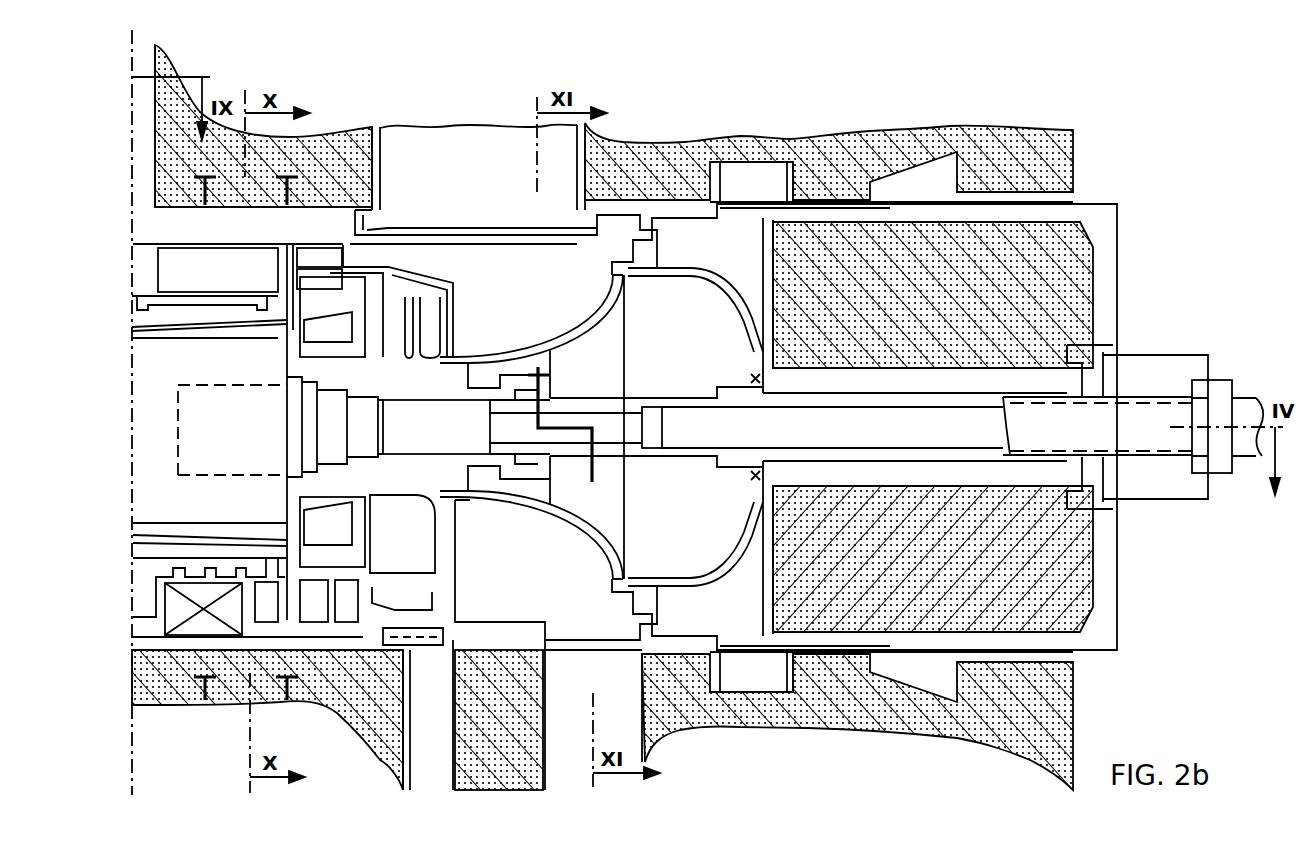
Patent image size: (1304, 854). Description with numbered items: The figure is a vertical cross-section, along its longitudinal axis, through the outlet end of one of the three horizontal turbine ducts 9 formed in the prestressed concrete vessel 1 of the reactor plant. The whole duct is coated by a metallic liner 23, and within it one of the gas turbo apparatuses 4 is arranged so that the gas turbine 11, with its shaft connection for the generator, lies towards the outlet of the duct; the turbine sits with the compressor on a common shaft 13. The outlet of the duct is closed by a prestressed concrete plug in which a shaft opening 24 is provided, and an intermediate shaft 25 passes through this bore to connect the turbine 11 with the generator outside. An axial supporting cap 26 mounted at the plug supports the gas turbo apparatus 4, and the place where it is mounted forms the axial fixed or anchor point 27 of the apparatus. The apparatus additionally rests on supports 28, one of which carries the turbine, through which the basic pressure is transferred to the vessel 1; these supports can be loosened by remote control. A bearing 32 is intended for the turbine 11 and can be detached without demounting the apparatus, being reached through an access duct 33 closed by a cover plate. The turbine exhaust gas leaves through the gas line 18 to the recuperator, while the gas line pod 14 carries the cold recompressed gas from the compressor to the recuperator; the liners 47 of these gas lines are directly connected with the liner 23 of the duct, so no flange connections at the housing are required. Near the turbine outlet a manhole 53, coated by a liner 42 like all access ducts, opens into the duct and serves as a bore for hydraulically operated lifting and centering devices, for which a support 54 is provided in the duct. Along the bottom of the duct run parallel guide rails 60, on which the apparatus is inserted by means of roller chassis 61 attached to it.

The prestressed concrete vessel 1 is at (778, 769).
The gas turbo apparatus 4 is at (325, 397).
The turbine duct 9 is at (300, 222).
The gas turbine 11 is at (183, 373).
The common shaft 13 is at (483, 417).
The gas line pod 14 is at (145, 62).
The gas line 18 is at (480, 167).
The metallic liner 23 is at (360, 647).
The shaft opening 24 is at (1067, 363).
The intermediate shaft 25 is at (613, 417).
The axial supporting cap 26 is at (690, 270).
The axial fixed point 27 is at (760, 487).
The support 28 is at (247, 675).
The bearing 32 is at (417, 415).
The access duct 33 is at (600, 709).
The metallic liner 42 is at (650, 745).
The liner 47 is at (590, 150).
The manhole 53 is at (416, 747).
The support 54 is at (410, 620).
The guide rails 60 is at (192, 645).
The roller chassis 61 is at (200, 597).